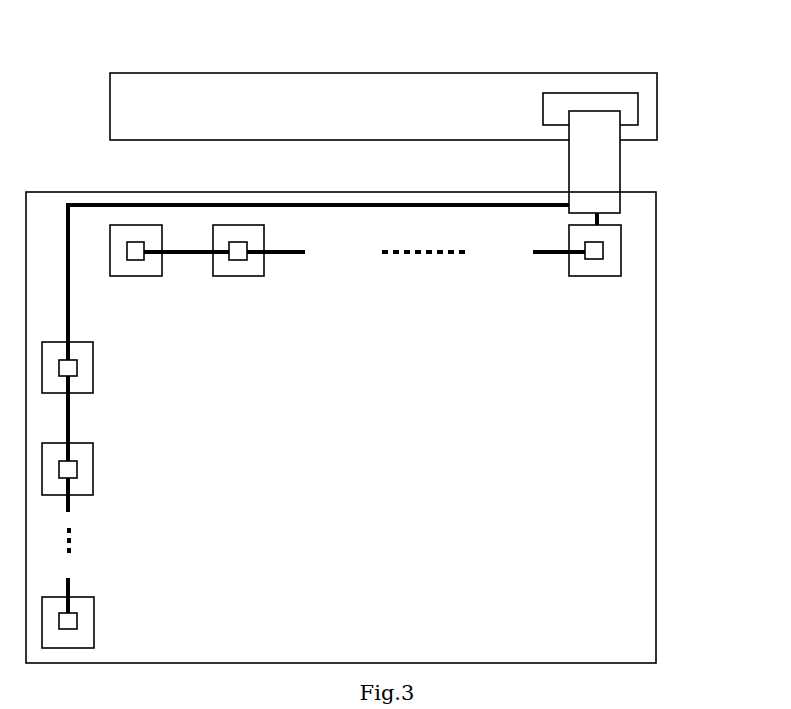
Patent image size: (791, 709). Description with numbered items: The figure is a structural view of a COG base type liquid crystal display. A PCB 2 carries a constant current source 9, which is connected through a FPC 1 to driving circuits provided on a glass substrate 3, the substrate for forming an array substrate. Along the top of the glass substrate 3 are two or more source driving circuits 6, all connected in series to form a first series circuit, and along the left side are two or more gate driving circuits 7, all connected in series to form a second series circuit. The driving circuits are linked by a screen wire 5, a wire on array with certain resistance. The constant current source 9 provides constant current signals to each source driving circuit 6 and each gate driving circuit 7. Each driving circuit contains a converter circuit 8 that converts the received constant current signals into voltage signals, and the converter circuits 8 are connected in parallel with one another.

The FPC 1 is at (621, 173).
The PCB 2 is at (298, 72).
The glass substrate 3 is at (632, 326).
The screen wire 5 is at (548, 256).
The source driving circuit 6 is at (265, 233).
The gate driving circuit 7 is at (94, 366).
The converter circuit 8 is at (75, 357).
The constant current source 9 is at (588, 103).